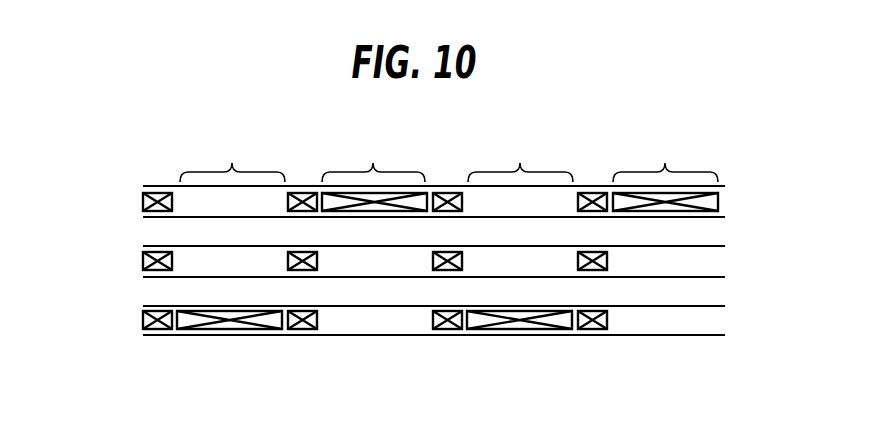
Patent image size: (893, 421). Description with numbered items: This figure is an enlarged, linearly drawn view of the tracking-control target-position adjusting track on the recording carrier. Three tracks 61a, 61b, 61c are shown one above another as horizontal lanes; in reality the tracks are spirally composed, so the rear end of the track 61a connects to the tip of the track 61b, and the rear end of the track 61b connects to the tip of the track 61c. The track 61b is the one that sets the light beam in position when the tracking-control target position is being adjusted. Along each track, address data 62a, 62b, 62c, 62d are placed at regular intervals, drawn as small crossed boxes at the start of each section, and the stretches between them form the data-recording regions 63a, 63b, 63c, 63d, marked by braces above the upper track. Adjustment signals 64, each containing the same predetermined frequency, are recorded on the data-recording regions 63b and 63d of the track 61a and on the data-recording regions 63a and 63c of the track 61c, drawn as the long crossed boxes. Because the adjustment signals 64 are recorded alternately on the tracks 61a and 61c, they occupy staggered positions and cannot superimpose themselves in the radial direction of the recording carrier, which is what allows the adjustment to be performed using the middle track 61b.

The track 61a is at (727, 209).
The track 61b is at (727, 267).
The track 61c is at (727, 327).
The address data 62a is at (143, 322).
The address data 62b is at (317, 208).
The address data 62c is at (433, 208).
The address data 62d is at (607, 208).
The data-recording region 63a is at (232, 158).
The data-recording region 63b is at (373, 158).
The data-recording region 63c is at (520, 158).
The data-recording region 63d is at (665, 158).
The adjustment signal 64 is at (322, 191).